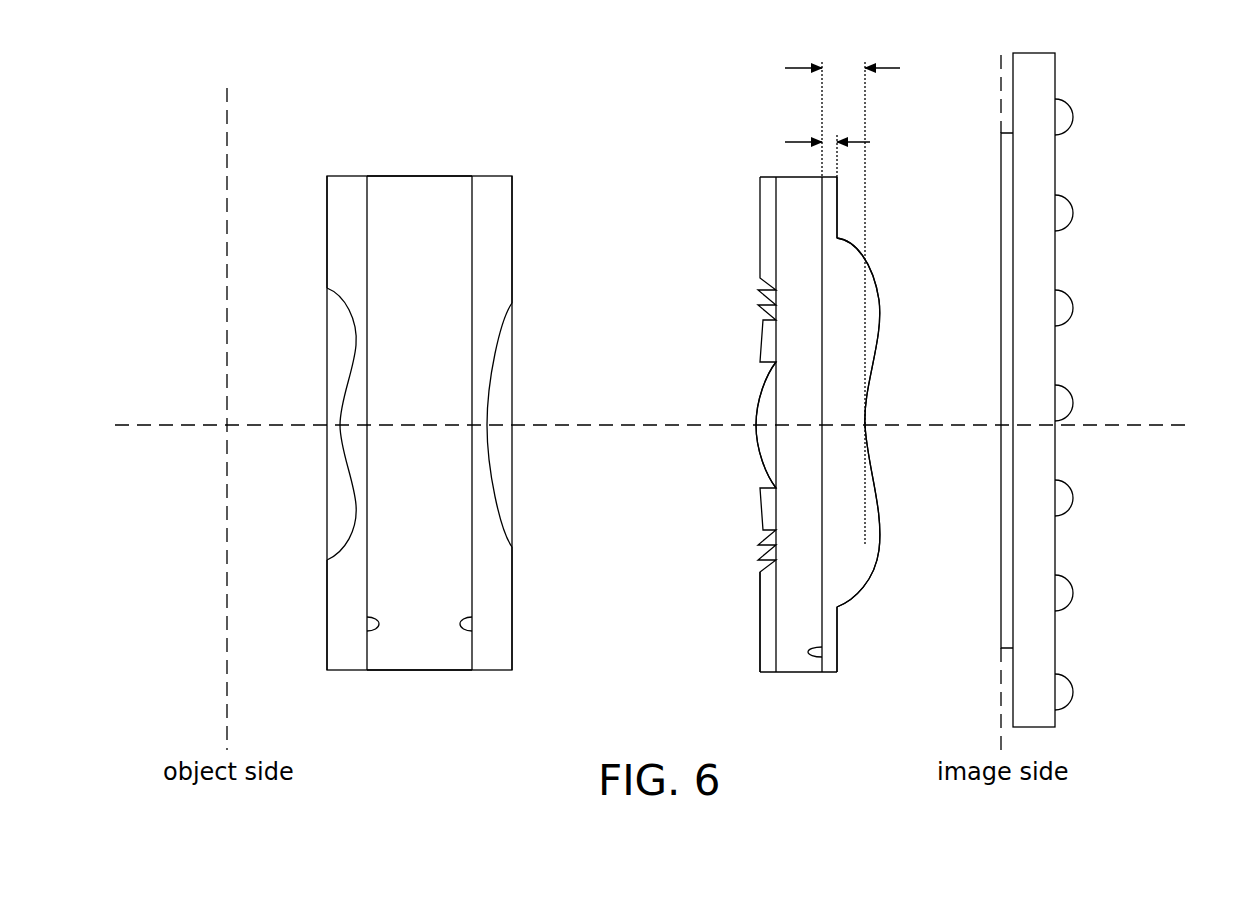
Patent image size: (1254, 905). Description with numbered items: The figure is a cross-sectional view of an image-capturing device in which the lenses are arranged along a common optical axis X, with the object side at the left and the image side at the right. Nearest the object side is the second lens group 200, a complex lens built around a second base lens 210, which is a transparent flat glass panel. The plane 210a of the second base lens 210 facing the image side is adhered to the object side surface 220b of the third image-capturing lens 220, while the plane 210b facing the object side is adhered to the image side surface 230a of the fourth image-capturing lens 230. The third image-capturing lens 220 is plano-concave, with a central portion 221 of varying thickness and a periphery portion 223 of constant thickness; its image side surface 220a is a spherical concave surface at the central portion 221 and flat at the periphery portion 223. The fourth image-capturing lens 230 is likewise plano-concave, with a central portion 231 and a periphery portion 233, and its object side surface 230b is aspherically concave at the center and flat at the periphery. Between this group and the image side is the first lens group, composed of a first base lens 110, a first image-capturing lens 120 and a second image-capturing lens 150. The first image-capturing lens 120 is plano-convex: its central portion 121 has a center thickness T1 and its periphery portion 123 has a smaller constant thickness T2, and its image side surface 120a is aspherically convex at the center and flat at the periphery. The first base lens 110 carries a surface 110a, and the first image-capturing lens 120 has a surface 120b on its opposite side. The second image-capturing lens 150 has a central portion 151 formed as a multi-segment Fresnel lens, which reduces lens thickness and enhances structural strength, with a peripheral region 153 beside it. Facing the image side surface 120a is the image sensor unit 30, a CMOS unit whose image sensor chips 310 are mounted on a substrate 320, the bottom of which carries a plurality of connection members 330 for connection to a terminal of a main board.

The second lens group 200 is at (348, 175).
The second base lens 210 is at (420, 660).
The plane 210a is at (462, 638).
The plane 210b is at (378, 638).
The third image-capturing lens 220 is at (492, 660).
The image side surface 220a is at (492, 468).
The object side surface 220b is at (476, 600).
The central portion 221 is at (492, 395).
The periphery portion 223 is at (502, 192).
The fourth image-capturing lens 230 is at (348, 660).
The image side surface 230a is at (362, 600).
The object side surface 230b is at (350, 470).
The central portion 231 is at (350, 396).
The periphery portion 233 is at (343, 191).
The first base lens 110 is at (798, 660).
The protrusion of substrate 110a is at (810, 655).
The first image-capturing lens 120 is at (828, 660).
The image side surface 120a is at (880, 542).
The flange of lens element 120 120b is at (824, 632).
The central portion 121 is at (852, 302).
The periphery portion 123 is at (830, 192).
The second image-capturing lens 150 is at (768, 660).
The central portion 151 is at (757, 407).
The peripheral portion of element 150 153 is at (768, 632).
The thickness T1 is at (842, 288).
The thickness T2 is at (827, 142).
The image sensor unit 30 is at (1012, 48).
The image sensor chips 310 is at (1008, 350).
The substrate 320 is at (1045, 262).
The connection member 330 is at (1066, 212).
The optical axis X is at (1170, 432).